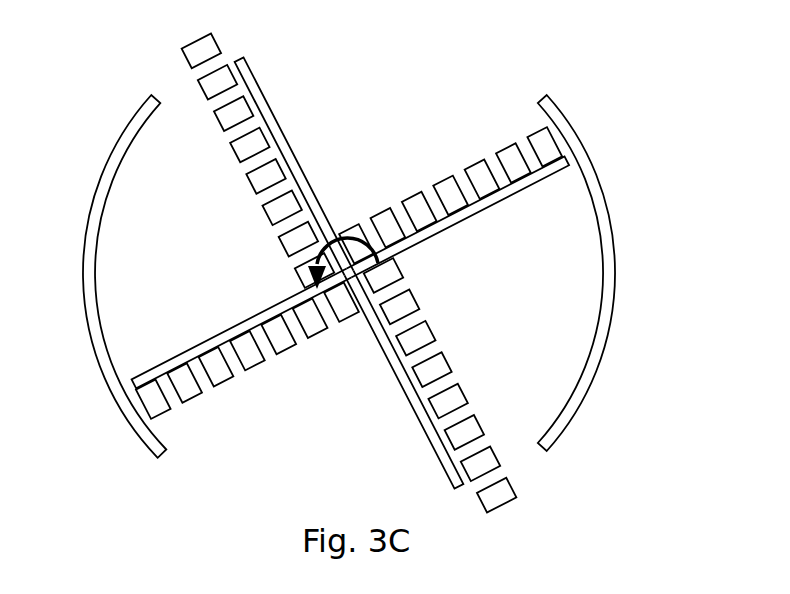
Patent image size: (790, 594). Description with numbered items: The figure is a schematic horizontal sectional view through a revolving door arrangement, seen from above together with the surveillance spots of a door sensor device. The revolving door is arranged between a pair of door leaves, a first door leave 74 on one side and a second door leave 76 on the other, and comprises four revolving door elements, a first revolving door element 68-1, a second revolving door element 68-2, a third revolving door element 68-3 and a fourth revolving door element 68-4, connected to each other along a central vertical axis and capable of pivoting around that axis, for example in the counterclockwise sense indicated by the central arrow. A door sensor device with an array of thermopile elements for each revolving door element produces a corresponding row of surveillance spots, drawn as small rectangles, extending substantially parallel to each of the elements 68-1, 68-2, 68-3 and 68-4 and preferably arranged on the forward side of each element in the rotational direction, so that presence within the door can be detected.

The first revolving door element 68-1 is at (259, 91).
The second revolving door element 68-2 is at (518, 191).
The third revolving door element 68-3 is at (443, 458).
The fourth revolving door element 68-4 is at (202, 344).
The first door leave 74 is at (138, 122).
The second door leave 76 is at (558, 120).